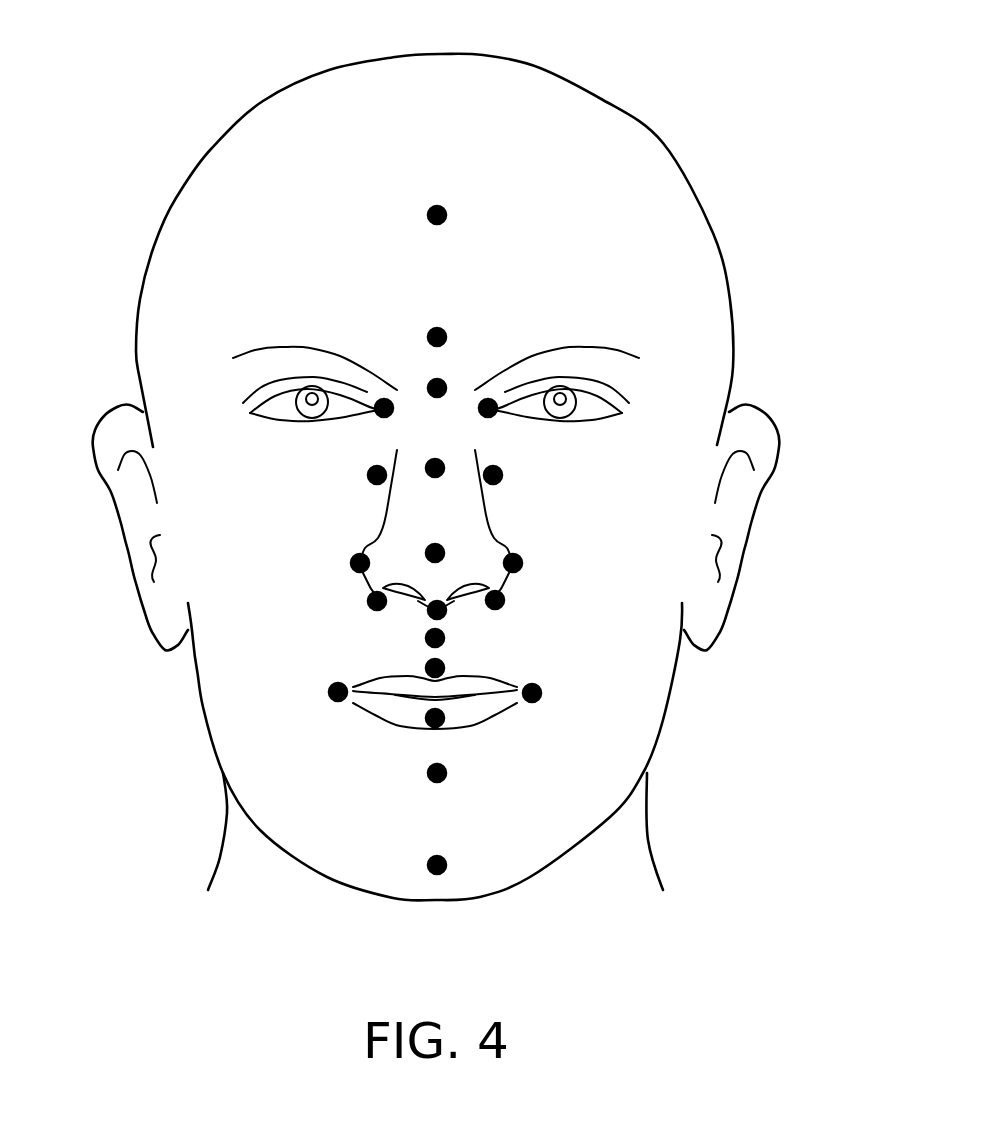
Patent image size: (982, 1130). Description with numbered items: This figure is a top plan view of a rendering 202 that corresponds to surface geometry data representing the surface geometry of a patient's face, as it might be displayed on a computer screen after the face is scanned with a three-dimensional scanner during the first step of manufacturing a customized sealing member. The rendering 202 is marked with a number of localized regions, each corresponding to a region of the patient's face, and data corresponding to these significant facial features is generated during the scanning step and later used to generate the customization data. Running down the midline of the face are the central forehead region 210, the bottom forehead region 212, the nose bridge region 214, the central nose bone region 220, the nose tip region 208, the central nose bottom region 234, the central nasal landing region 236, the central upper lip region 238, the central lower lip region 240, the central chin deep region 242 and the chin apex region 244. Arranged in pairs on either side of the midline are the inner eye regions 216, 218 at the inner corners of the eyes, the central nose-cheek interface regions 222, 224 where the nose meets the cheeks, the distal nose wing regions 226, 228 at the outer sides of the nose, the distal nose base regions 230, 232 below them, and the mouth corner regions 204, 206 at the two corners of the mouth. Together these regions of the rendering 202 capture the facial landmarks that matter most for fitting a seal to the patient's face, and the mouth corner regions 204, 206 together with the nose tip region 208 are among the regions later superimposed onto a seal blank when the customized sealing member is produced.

The rendering 202 is at (131, 94).
The mouth corner region 204 is at (532, 693).
The mouth corner region 206 is at (338, 692).
The nose tip region 208 is at (435, 553).
The central forehead region 210 is at (437, 215).
The bottom forehead region 212 is at (437, 337).
The nose bridge region 214 is at (437, 388).
The inner eye region 216 is at (488, 408).
The inner eye region 218 is at (435, 468).
The central nose bone region 220 is at (384, 408).
The central nose-cheek interface region 222 is at (377, 475).
The central nose-cheek interface region 224 is at (493, 475).
The distal nose wing region 226 is at (360, 563).
The distal nose wing region 228 is at (513, 563).
The distal nose base region 230 is at (377, 601).
The distal nose base region 232 is at (495, 600).
The central nose bottom region 234 is at (437, 610).
The central nasal landing region 236 is at (435, 638).
The central upper lip region 238 is at (435, 668).
The central lower lip region 240 is at (435, 718).
The central chin deep region 242 is at (437, 773).
The chin apex region 244 is at (437, 865).